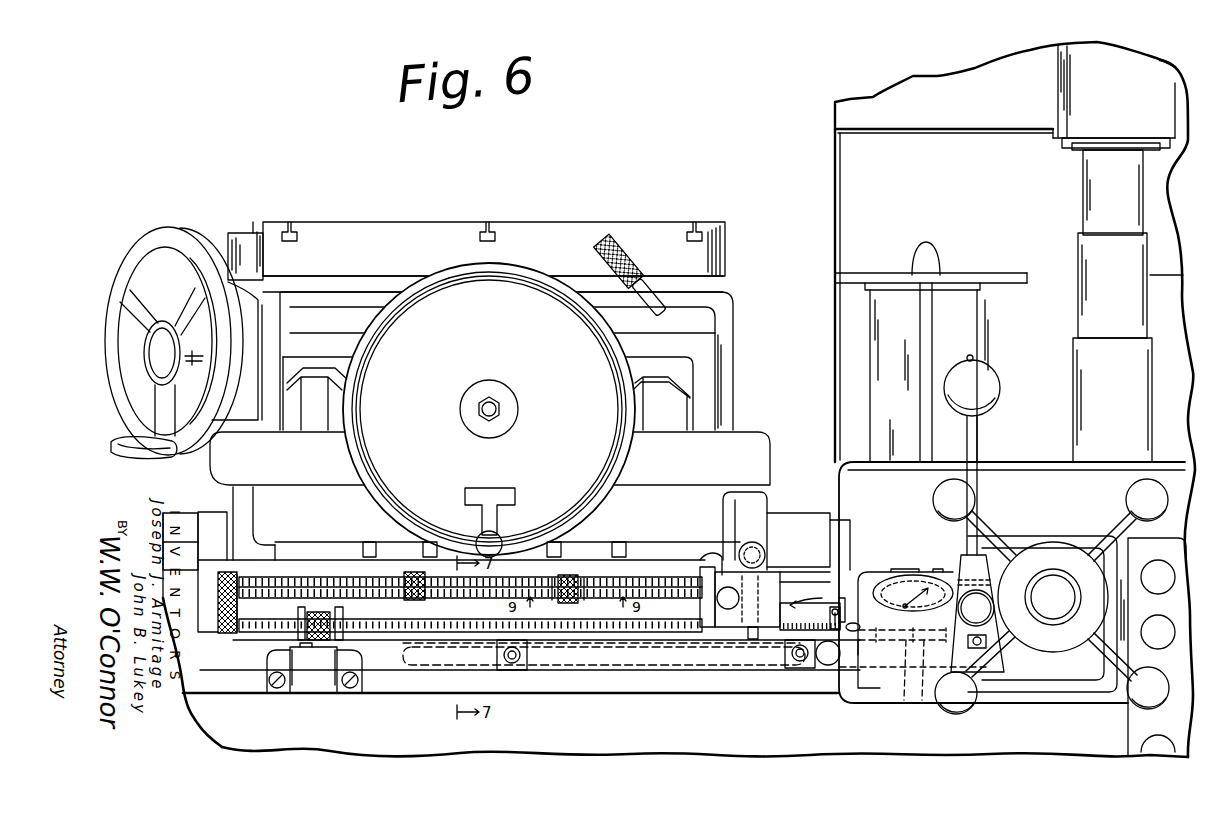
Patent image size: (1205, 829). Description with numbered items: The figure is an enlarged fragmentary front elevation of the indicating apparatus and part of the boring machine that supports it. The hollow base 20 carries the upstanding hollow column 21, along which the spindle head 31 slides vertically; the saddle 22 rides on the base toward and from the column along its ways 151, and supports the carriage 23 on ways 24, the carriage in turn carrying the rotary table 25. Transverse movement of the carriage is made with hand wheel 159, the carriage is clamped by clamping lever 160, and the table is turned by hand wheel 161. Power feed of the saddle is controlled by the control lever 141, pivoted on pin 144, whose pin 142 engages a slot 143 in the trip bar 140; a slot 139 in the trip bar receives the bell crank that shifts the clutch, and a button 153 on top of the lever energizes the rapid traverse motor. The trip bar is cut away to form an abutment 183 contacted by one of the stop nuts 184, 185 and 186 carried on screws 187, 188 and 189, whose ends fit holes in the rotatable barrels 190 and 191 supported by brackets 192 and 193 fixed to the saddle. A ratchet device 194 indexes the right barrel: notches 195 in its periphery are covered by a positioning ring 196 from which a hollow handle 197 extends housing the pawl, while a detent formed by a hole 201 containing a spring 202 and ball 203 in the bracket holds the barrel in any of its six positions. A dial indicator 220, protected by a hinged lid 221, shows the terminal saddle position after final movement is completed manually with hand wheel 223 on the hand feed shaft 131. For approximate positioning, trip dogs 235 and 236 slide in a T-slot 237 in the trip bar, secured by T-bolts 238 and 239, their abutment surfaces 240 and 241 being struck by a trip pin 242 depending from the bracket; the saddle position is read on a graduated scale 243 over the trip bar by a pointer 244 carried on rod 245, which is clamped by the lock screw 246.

The base 20 is at (232, 738).
The column 21 is at (1160, 368).
The saddle 22 is at (218, 462).
The carriage 23 is at (708, 350).
The ways 24 is at (670, 416).
The rotary table 25 is at (714, 255).
The spindle head 31 is at (1085, 112).
The hand feed shaft 131 is at (1052, 578).
The slot 139 is at (940, 665).
The trip bar 140 is at (405, 663).
The control lever 141 is at (980, 396).
The pin 142 is at (1000, 664).
The slot 143 is at (985, 648).
The pin 144 is at (985, 613).
The ways 151 is at (180, 528).
The button 153 is at (972, 356).
The hand wheel 159 is at (511, 277).
The clamping lever 160 is at (648, 253).
The hand wheel 161 is at (118, 302).
The abutment 183 is at (355, 638).
The stop nut 184 is at (346, 612).
The stop nut 185 is at (562, 578).
The stop nut 186 is at (410, 572).
The screw 187 is at (250, 634).
The screw 188 is at (625, 578).
The screw 189 is at (332, 577).
The barrel 190 is at (228, 636).
The barrel 191 is at (718, 632).
The bracket 192 is at (210, 549).
The bracket 193 is at (755, 505).
The ratchet device 194 is at (814, 615).
The notches 195 is at (724, 560).
The positioning ring 196 is at (725, 633).
The hollow handle 197 is at (718, 600).
The hole 201 is at (805, 586).
The spring 202 is at (805, 574).
The ball 203 is at (806, 606).
The dial indicator 220 is at (905, 592).
The hinged lid 221 is at (936, 575).
The hand wheel 223 is at (1135, 500).
The trip dog 235 is at (532, 670).
The trip dog 236 is at (816, 666).
The T-slot 237 is at (434, 660).
The T-bolt 238 is at (500, 666).
The T-bolt 239 is at (798, 630).
The abutment surface 240 is at (528, 643).
The abutment surface 241 is at (803, 667).
The trip pin 242 is at (753, 643).
The graduated scale 243 is at (850, 644).
The pointer 244 is at (860, 595).
The rod 245 is at (790, 630).
The lock screw 246 is at (754, 542).